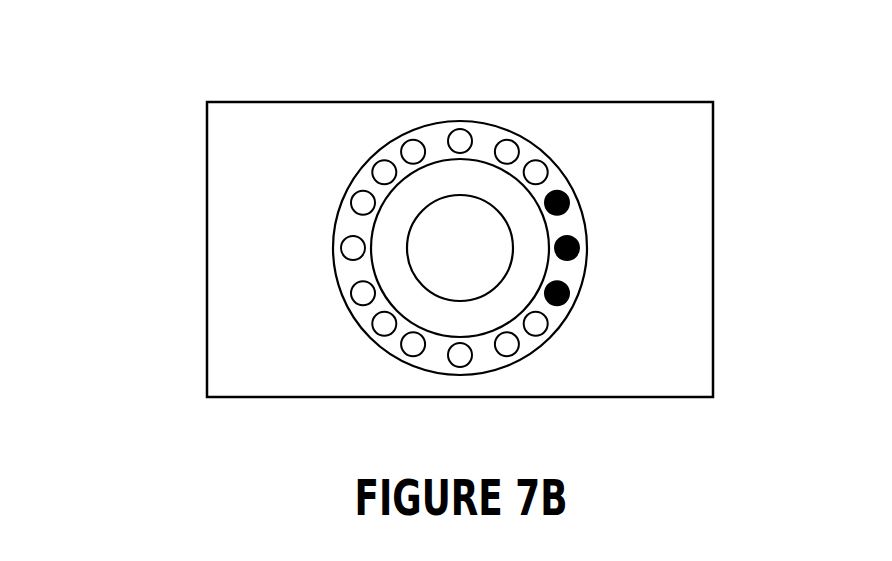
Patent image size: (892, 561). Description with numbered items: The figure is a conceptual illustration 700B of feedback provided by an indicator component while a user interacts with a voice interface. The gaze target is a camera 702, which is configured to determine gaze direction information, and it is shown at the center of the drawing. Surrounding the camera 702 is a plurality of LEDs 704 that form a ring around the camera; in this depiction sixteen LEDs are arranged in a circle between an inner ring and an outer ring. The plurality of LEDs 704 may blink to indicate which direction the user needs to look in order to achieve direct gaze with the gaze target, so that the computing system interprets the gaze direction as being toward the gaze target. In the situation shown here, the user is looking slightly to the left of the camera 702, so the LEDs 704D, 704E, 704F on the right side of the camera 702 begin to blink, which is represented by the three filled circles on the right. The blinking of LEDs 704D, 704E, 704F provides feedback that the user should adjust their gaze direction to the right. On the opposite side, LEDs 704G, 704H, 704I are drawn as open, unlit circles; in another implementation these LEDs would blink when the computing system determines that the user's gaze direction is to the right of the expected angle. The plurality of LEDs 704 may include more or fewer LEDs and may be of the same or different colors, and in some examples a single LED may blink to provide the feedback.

The conceptual illustration 700B is at (136, 77).
The camera 702 is at (440, 261).
The plurality of LEDs 704 is at (549, 159).
The LED 704D is at (567, 203).
The LED 704E is at (577, 248).
The LED 704F is at (567, 293).
The LED 704G is at (353, 207).
The LED 704H is at (348, 255).
The LED 704I is at (358, 302).